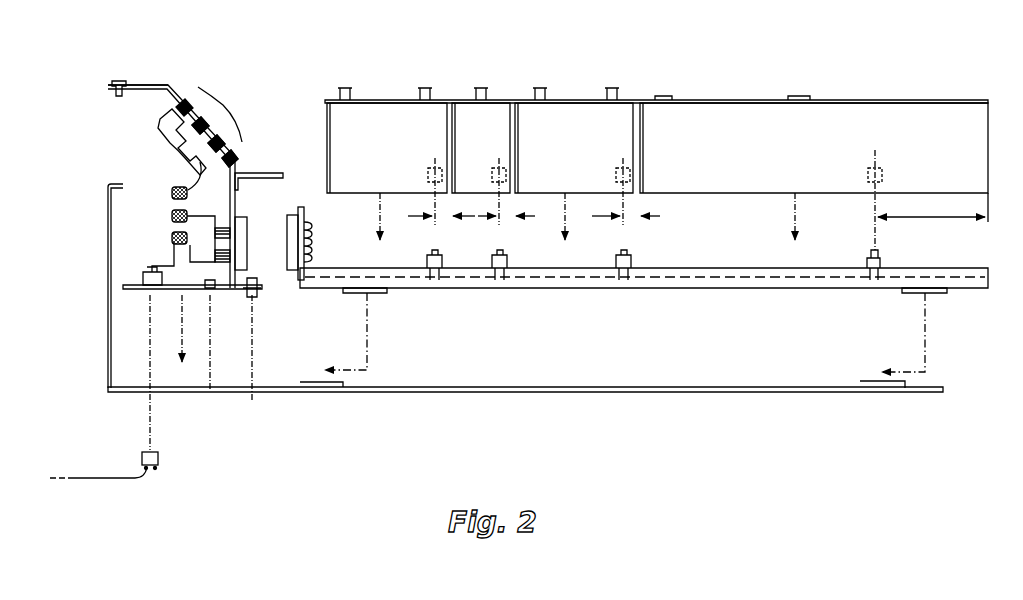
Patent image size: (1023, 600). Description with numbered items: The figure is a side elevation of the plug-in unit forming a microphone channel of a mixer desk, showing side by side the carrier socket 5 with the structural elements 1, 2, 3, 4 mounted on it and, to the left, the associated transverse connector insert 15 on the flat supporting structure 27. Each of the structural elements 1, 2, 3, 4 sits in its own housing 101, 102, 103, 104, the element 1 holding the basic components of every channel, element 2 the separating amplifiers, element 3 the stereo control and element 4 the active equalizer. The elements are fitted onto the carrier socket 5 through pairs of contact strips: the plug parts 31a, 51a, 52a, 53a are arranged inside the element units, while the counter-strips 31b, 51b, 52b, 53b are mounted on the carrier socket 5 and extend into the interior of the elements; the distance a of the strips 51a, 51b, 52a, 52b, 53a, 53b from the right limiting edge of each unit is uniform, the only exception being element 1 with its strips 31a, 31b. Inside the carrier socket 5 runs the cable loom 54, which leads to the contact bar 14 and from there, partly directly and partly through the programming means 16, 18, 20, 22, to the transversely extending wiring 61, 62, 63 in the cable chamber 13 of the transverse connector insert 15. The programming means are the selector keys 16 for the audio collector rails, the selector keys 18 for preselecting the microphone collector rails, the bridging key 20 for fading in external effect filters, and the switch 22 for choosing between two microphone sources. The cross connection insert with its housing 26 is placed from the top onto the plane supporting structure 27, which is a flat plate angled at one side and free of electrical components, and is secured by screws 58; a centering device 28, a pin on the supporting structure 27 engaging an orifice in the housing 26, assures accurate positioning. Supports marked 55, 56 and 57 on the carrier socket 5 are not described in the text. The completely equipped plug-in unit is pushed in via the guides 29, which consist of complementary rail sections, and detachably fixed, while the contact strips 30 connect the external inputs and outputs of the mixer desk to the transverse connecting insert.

The structural element 1 is at (858, 115).
The structural element 2 is at (578, 115).
The structural element 3 is at (494, 112).
The structural element 4 is at (390, 128).
The carrier socket 5 is at (975, 280).
The cable chamber 13 is at (138, 216).
The contact bar 14 is at (290, 232).
The transverse connector insert 15 is at (167, 74).
The selector keys 16 is at (248, 90).
The selector keys 18 is at (200, 125).
The bridging key 20 is at (230, 158).
The switch 22 is at (216, 143).
The housing 26 is at (148, 89).
The supporting structure 27 is at (585, 393).
The centering device 28 is at (210, 300).
The guides 29 is at (364, 290).
The contact strips 30 is at (147, 300).
The contact strip 31a is at (880, 183).
The counter-strip 31b is at (880, 264).
The contact strip 51a is at (628, 183).
The counter-strip 51b is at (632, 264).
The contact strip 52a is at (504, 183).
The counter-strip 52b is at (508, 262).
The contact strip 53a is at (440, 183).
The counter-strip 53b is at (442, 262).
The cable loom 54 is at (662, 289).
The stop 55 is at (618, 256).
The stop 56 is at (496, 256).
The stop 57 is at (428, 258).
The screws 58 is at (252, 368).
The transverse wiring 61 is at (172, 192).
The transverse wiring 62 is at (172, 216).
The transverse wiring 63 is at (172, 238).
The housing 101 is at (715, 108).
The housing 102 is at (560, 100).
The housing 103 is at (472, 100).
The housing 104 is at (378, 100).